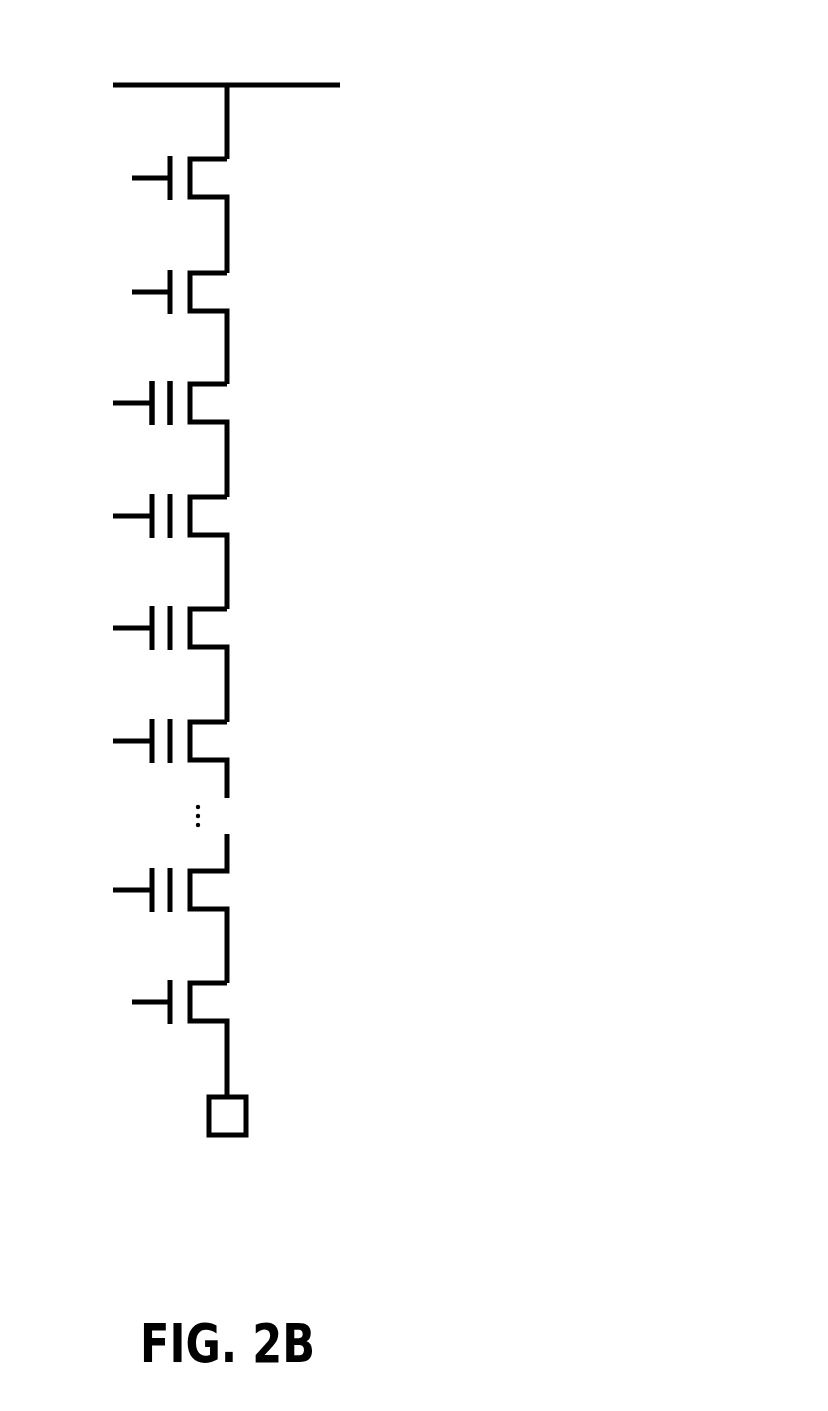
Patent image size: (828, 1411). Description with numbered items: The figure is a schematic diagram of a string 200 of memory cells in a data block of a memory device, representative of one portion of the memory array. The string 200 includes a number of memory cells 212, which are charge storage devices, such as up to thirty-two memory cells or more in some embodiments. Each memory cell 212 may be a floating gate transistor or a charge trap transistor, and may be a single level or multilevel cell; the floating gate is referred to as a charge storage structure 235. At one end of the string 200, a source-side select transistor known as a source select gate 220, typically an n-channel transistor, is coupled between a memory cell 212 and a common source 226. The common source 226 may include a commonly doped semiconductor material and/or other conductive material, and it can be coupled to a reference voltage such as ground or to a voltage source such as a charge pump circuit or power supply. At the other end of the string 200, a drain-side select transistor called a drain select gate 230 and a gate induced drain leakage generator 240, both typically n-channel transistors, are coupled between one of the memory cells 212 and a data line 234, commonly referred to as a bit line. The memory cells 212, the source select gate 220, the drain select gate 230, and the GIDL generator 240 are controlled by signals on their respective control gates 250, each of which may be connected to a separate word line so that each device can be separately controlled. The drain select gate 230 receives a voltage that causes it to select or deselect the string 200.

The string 200 is at (590, 91).
The data line 234 is at (275, 80).
The gate induced drain leakage generator 240 is at (228, 138).
The drain select gate 230 is at (228, 252).
The memory cell 212 is at (228, 363).
The charge storage structure 235 is at (170, 427).
The control gate 250 is at (135, 178).
The source select gate 220 is at (228, 970).
The common source 226 is at (207, 1112).